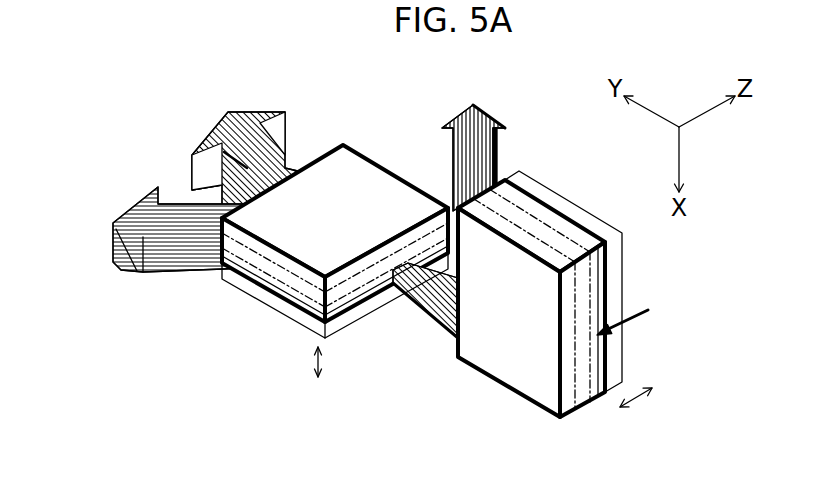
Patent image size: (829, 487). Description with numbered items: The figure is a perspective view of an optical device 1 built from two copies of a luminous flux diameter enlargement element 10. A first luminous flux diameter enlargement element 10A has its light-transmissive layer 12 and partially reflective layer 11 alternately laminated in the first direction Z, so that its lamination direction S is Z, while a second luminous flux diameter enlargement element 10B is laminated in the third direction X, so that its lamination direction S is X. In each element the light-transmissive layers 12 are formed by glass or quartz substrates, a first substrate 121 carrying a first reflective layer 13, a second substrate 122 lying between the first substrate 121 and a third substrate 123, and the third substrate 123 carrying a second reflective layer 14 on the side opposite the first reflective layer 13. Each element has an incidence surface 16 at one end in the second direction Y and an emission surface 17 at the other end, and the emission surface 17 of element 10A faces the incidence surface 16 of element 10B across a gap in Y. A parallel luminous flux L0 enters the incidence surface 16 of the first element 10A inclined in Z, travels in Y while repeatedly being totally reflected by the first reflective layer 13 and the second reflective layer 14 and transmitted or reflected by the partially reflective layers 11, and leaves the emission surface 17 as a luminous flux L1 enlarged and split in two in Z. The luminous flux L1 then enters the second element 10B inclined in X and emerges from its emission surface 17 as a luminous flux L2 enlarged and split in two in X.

The optical device 1 is at (373, 92).
The luminous flux diameter enlargement element 10 is at (398, 315).
The first luminous flux diameter enlargement element 10A is at (518, 332).
The second luminous flux diameter enlargement element 10B is at (324, 285).
The partially reflective layer 11 is at (221, 283).
The light-transmissive layer 12 is at (464, 283).
The first substrate 121 is at (316, 178).
The second substrate 122 is at (297, 278).
The third substrate 123 is at (303, 318).
The first reflective layer 13 is at (367, 304).
The second reflective layer 14 is at (369, 178).
The incidence surface 16 is at (357, 268).
The emission surface 17 is at (303, 172).
The luminous flux L0 is at (639, 315).
The luminous flux L1 is at (452, 228).
The luminous flux L2 is at (207, 192).
The lamination direction S is at (484, 386).